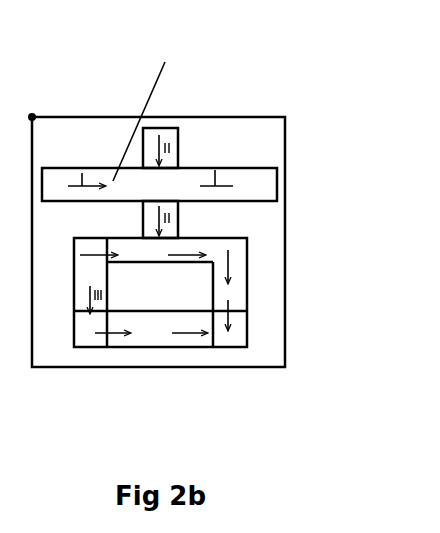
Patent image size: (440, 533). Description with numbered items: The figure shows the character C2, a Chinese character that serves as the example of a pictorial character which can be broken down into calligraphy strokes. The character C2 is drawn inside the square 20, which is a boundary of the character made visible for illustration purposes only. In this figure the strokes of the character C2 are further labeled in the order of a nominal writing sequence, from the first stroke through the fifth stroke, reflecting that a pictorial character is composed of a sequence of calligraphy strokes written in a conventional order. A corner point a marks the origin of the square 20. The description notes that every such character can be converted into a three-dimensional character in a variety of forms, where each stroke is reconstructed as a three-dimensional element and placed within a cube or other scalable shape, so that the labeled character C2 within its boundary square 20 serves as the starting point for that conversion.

The reference point / origin a is at (61, 76).
The character C2 is at (165, 62).
The square 20 is at (158, 280).